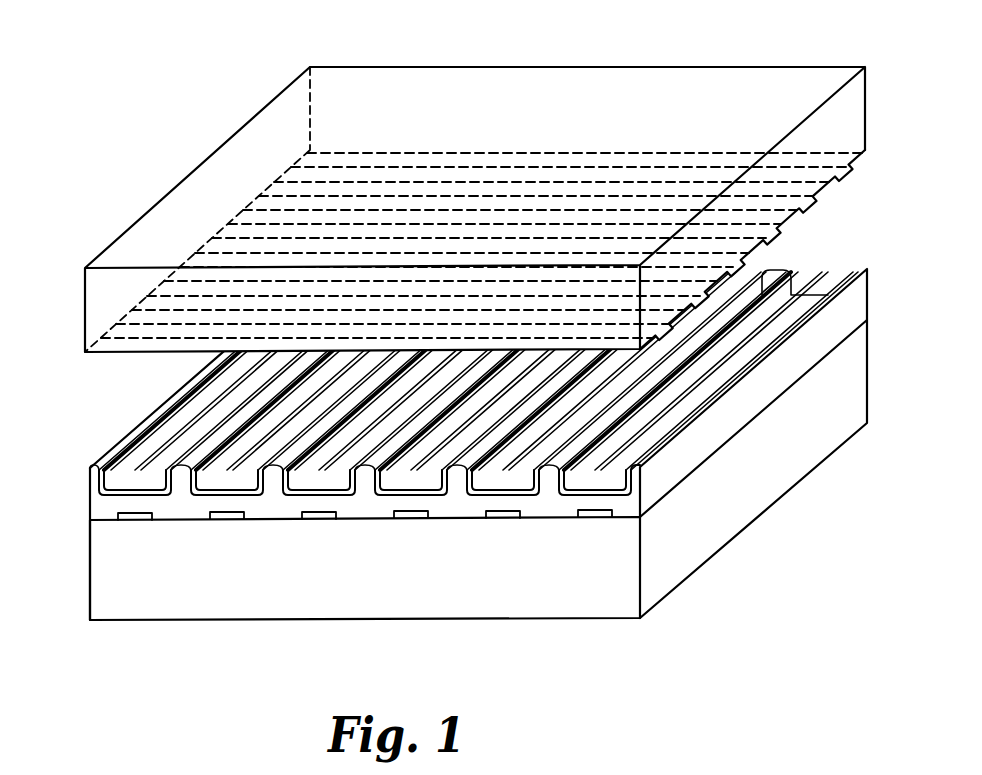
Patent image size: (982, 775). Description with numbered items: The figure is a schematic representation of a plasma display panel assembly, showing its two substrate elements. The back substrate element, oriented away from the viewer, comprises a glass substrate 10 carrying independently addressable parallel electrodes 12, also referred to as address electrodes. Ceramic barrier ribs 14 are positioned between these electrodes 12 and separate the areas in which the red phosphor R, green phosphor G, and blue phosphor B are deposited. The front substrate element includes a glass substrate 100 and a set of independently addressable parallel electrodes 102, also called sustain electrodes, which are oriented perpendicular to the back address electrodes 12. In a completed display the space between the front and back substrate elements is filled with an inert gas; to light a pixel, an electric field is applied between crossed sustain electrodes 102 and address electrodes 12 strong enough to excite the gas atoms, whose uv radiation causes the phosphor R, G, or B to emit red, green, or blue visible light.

The glass substrate 10 is at (653, 573).
The electrodes 12 is at (508, 515).
The ceramic barrier ribs 14 is at (112, 500).
The glass substrate 100 is at (822, 83).
The electrodes 102 is at (805, 212).
The red phosphor R is at (255, 508).
The green phosphor G is at (342, 495).
The blue phosphor B is at (430, 483).